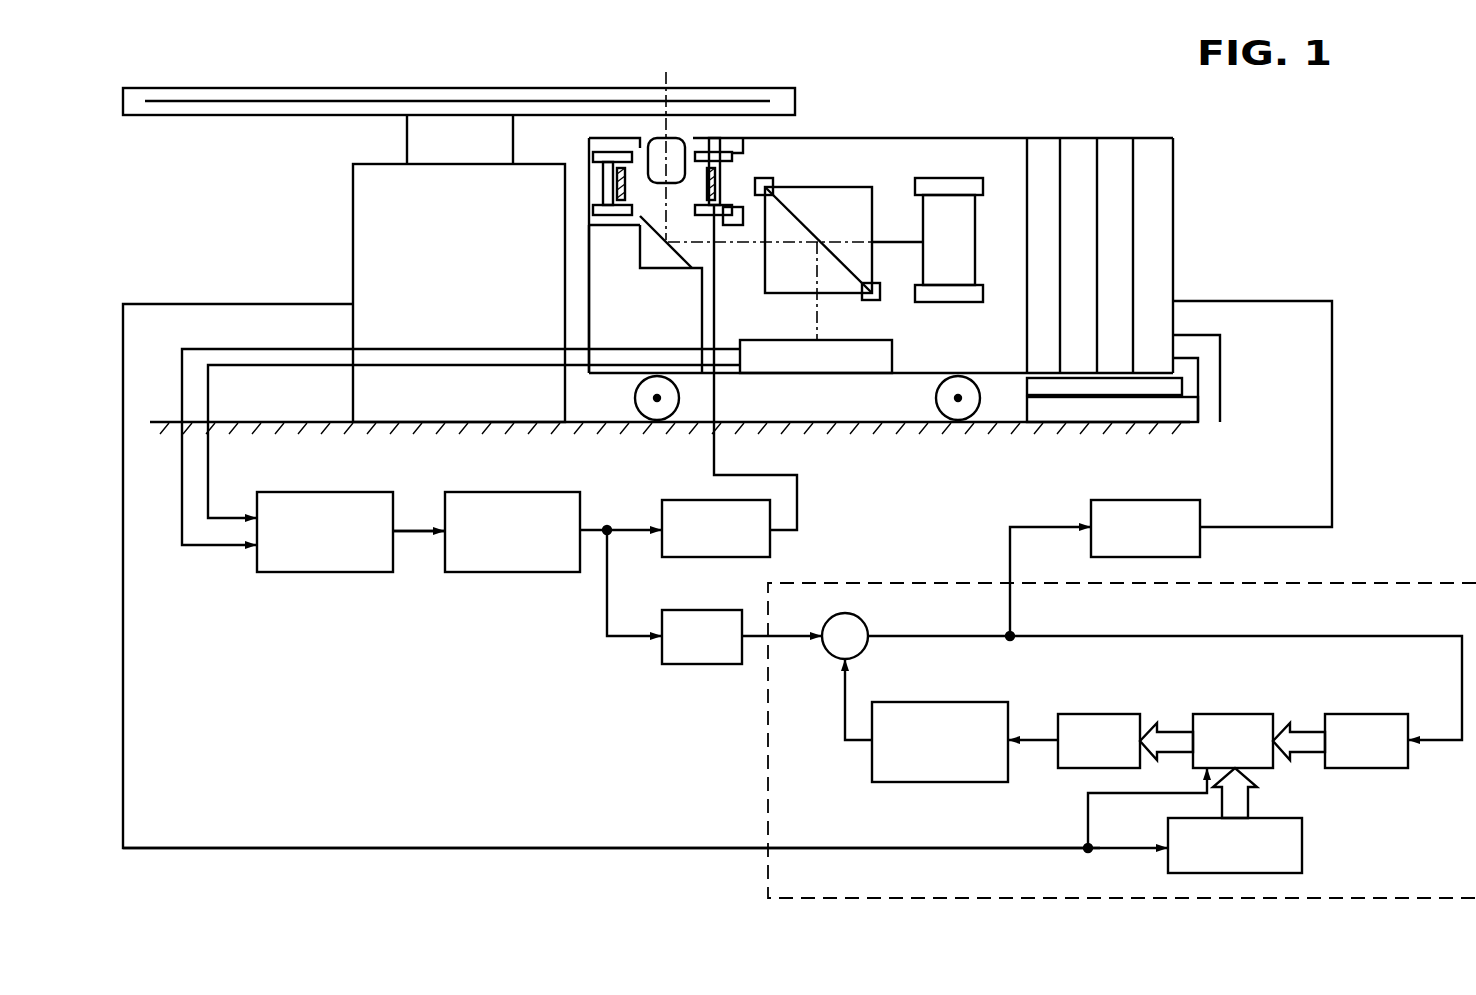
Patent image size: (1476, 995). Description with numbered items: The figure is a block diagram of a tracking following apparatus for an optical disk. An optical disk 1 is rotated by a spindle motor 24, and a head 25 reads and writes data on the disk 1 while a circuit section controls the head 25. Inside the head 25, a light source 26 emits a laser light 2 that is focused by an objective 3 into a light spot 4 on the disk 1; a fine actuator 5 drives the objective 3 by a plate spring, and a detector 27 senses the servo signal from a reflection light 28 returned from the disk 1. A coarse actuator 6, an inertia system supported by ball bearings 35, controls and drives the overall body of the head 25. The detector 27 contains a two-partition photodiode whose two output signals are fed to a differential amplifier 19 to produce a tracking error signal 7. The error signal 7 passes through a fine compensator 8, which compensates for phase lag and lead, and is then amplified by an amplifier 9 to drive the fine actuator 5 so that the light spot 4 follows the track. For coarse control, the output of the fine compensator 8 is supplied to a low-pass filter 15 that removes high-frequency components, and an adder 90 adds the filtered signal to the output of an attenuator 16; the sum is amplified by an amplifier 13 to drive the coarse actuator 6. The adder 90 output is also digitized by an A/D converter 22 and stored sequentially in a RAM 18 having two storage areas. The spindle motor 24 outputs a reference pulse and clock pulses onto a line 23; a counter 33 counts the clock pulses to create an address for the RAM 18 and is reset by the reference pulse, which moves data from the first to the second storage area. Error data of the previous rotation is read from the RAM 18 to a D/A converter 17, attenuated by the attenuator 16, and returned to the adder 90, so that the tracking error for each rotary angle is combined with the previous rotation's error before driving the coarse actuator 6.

The optical disk 1 is at (795, 96).
The laser light 2 is at (901, 240).
The objective 3 is at (683, 140).
The light spot 4 is at (666, 80).
The fine actuator 5 is at (743, 185).
The coarse actuator 6 is at (1220, 372).
The tracking error signal 7 is at (413, 529).
The fine compensator 8 is at (514, 574).
The amplifier 9 is at (683, 500).
The amplifier 13 is at (1147, 500).
The low-pass filter 15 is at (700, 667).
The attenuator 16 is at (937, 702).
The digital-to-analog converter 17 is at (1093, 714).
The RAM 18 is at (1233, 714).
The differential amplifier 19 is at (323, 574).
The analog-to-digital converter 22 is at (1366, 714).
The line 23 is at (428, 848).
The spindle motor 24 is at (353, 203).
The head 25 is at (980, 138).
The light source 26 is at (953, 303).
The detector 27 is at (797, 373).
The reflection light 28 is at (817, 330).
The counter 33 is at (1302, 850).
The ball bearings 35 is at (635, 400).
The adder 90 is at (866, 622).